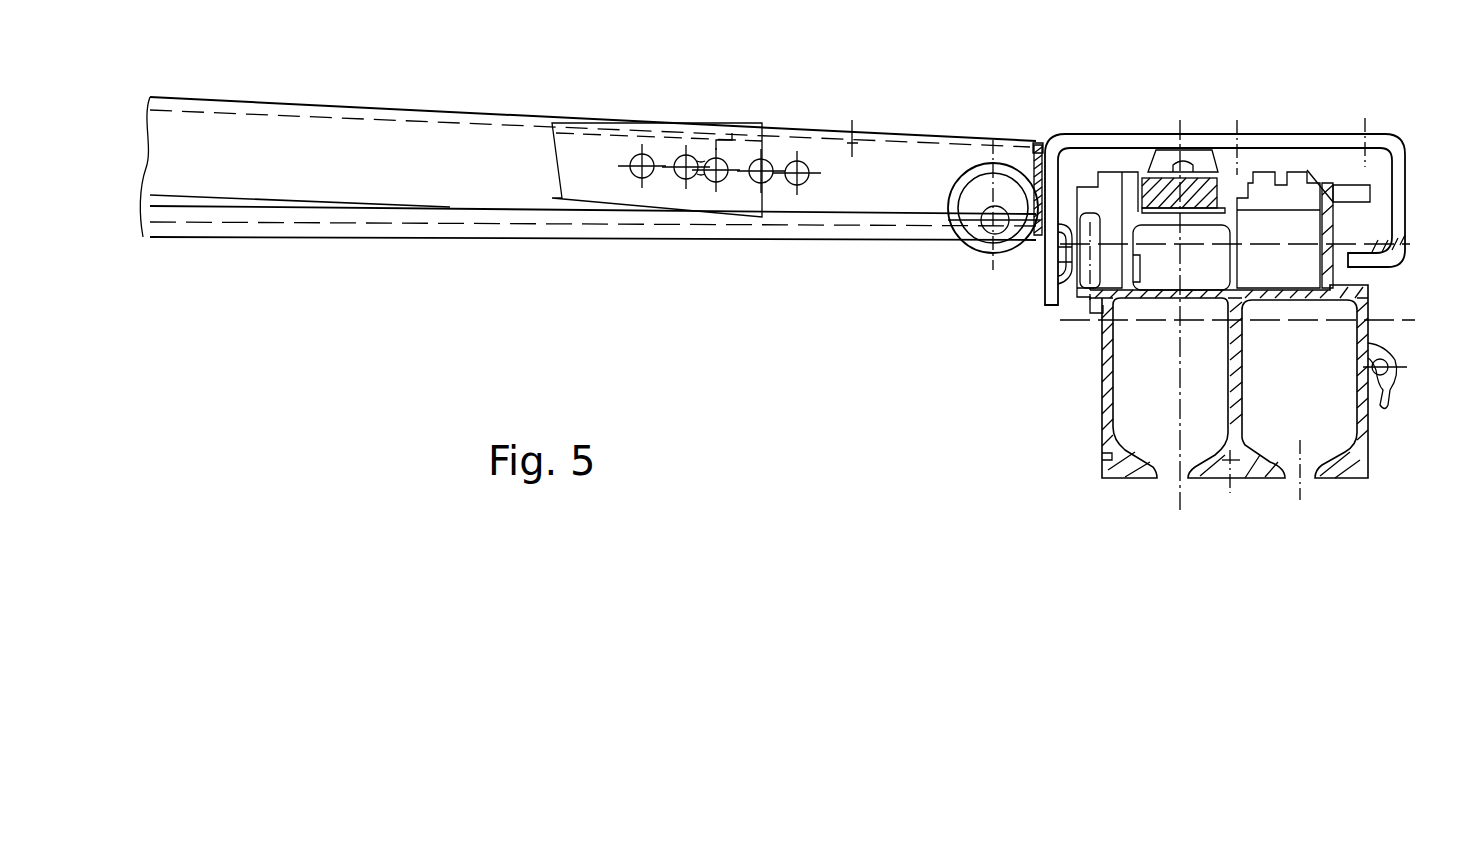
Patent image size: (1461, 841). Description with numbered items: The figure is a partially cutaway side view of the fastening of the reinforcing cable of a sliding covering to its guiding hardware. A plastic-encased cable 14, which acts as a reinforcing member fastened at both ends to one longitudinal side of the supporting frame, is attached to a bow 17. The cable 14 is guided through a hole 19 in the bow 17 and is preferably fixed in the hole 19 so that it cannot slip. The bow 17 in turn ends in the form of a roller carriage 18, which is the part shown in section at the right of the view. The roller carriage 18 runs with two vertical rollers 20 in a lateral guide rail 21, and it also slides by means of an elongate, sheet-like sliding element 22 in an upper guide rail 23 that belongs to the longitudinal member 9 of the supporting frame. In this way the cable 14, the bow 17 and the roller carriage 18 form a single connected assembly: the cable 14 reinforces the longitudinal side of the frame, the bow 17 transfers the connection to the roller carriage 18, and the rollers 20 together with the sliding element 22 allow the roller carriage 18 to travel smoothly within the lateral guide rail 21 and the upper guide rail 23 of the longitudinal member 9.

The longitudinal member 9 is at (1103, 398).
The cable 14 is at (502, 225).
The bow 17 is at (427, 150).
The roller carriage 18 is at (1083, 142).
The hole 19 is at (985, 197).
The vertical rollers 20 is at (1077, 276).
The lateral guide rail 21 is at (1112, 225).
The sliding element 22 is at (1212, 188).
The upper guide rail 23 is at (1335, 208).